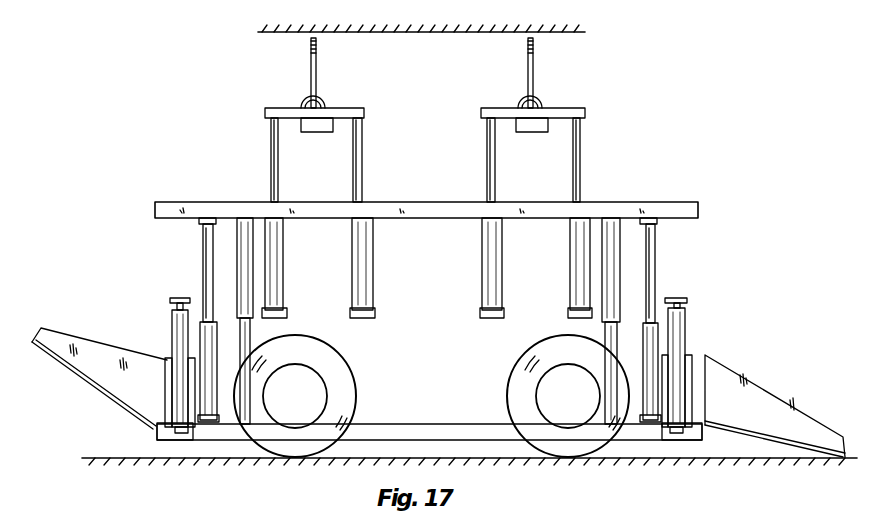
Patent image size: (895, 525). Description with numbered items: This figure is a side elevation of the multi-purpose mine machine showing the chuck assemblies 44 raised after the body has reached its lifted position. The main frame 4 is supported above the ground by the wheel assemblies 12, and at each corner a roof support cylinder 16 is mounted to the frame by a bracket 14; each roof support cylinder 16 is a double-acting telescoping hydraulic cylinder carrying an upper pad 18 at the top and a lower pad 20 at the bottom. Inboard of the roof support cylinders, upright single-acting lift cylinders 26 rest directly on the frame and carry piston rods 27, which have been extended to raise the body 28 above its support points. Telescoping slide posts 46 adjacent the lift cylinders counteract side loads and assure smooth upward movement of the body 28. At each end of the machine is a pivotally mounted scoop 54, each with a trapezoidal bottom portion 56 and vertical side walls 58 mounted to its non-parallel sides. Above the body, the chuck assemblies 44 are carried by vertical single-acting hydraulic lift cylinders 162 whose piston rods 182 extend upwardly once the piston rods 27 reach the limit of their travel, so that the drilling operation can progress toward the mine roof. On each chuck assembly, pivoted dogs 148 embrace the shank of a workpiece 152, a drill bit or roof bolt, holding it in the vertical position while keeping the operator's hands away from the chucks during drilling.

The main frame 4 is at (438, 424).
The wheel assembly 12 is at (289, 444).
The bracket 14 is at (166, 364).
The roof support cylinder 16 is at (172, 328).
The upper pad 18 is at (173, 302).
The lower pad 20 is at (166, 440).
The lift cylinder 26 is at (200, 318).
The piston rod 27 is at (203, 242).
The body 28 is at (436, 200).
The chuck assembly 44 is at (297, 101).
The telescoping slide post 46 is at (252, 334).
The scoop 54 is at (86, 336).
The bottom portion 56 is at (85, 383).
The side wall 58 is at (83, 367).
The dog 148 is at (300, 106).
The workpiece 152 is at (318, 54).
The lift cylinder 162 is at (352, 252).
The piston rod 182 is at (353, 166).